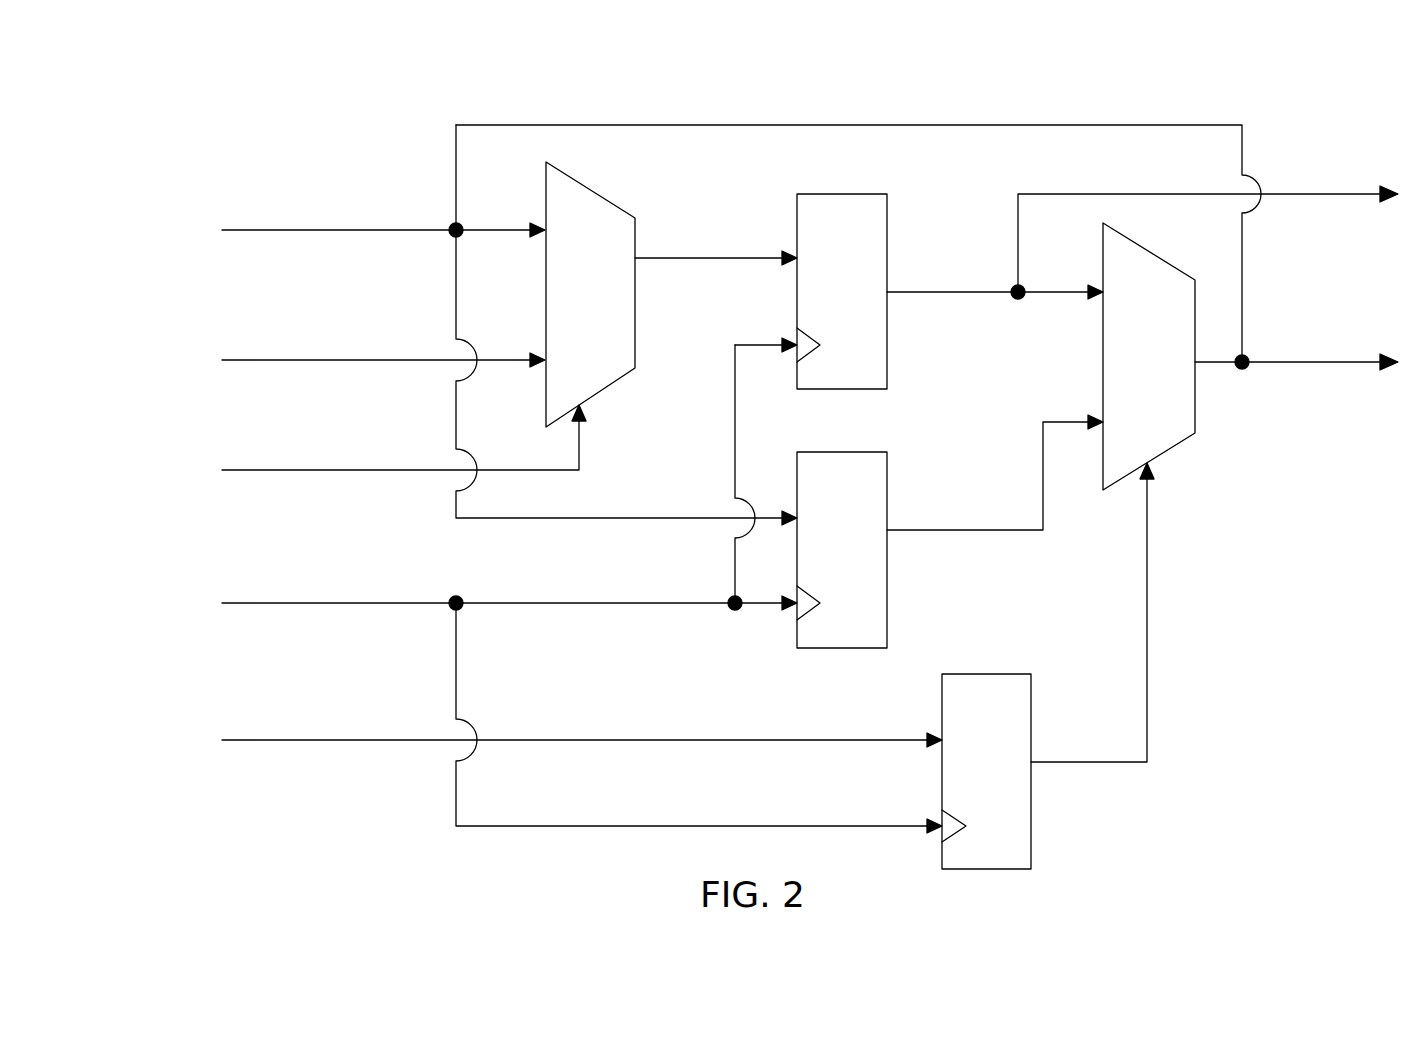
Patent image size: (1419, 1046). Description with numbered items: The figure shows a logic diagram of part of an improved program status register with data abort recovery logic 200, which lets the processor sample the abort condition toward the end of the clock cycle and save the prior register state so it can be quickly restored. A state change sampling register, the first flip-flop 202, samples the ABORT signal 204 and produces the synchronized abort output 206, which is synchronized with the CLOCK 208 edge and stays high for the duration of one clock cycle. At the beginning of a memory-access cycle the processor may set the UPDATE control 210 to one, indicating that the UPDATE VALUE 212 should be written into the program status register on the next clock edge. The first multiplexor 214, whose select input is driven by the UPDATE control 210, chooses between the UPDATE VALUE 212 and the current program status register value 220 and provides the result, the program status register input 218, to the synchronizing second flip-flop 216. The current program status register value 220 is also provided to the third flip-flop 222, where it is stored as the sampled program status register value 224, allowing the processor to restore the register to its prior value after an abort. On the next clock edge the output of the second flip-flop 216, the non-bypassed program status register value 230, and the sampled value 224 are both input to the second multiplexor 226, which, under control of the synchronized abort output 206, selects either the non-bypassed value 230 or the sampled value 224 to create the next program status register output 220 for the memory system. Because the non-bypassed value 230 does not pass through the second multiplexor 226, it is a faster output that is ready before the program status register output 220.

The improved program status register with data abort recovery logic 200 is at (302, 113).
The flip-flop FF1 202 is at (1032, 840).
The ABORT signal 204 is at (404, 734).
The ABORT.SYNC 206 is at (1150, 685).
The CLOCK 208 is at (404, 597).
The UPDATE control 210 is at (404, 464).
The UPDATE VALUE 212 is at (404, 354).
The multiplexor MUX1 214 is at (595, 395).
The flip-flop FF2 216 is at (888, 360).
The Program Status Register Input (PSRi) 218 is at (745, 252).
The Program Status Register value (PSRo) 220 is at (404, 222).
The flip-flop FF3 222 is at (888, 568).
The Sampled Program Status Register value (sPSR) 224 is at (995, 472).
The multiplexor MUX2 226 is at (1197, 400).
The Non-bypassed Program Status Register value (nPSR) 230 is at (1356, 190).